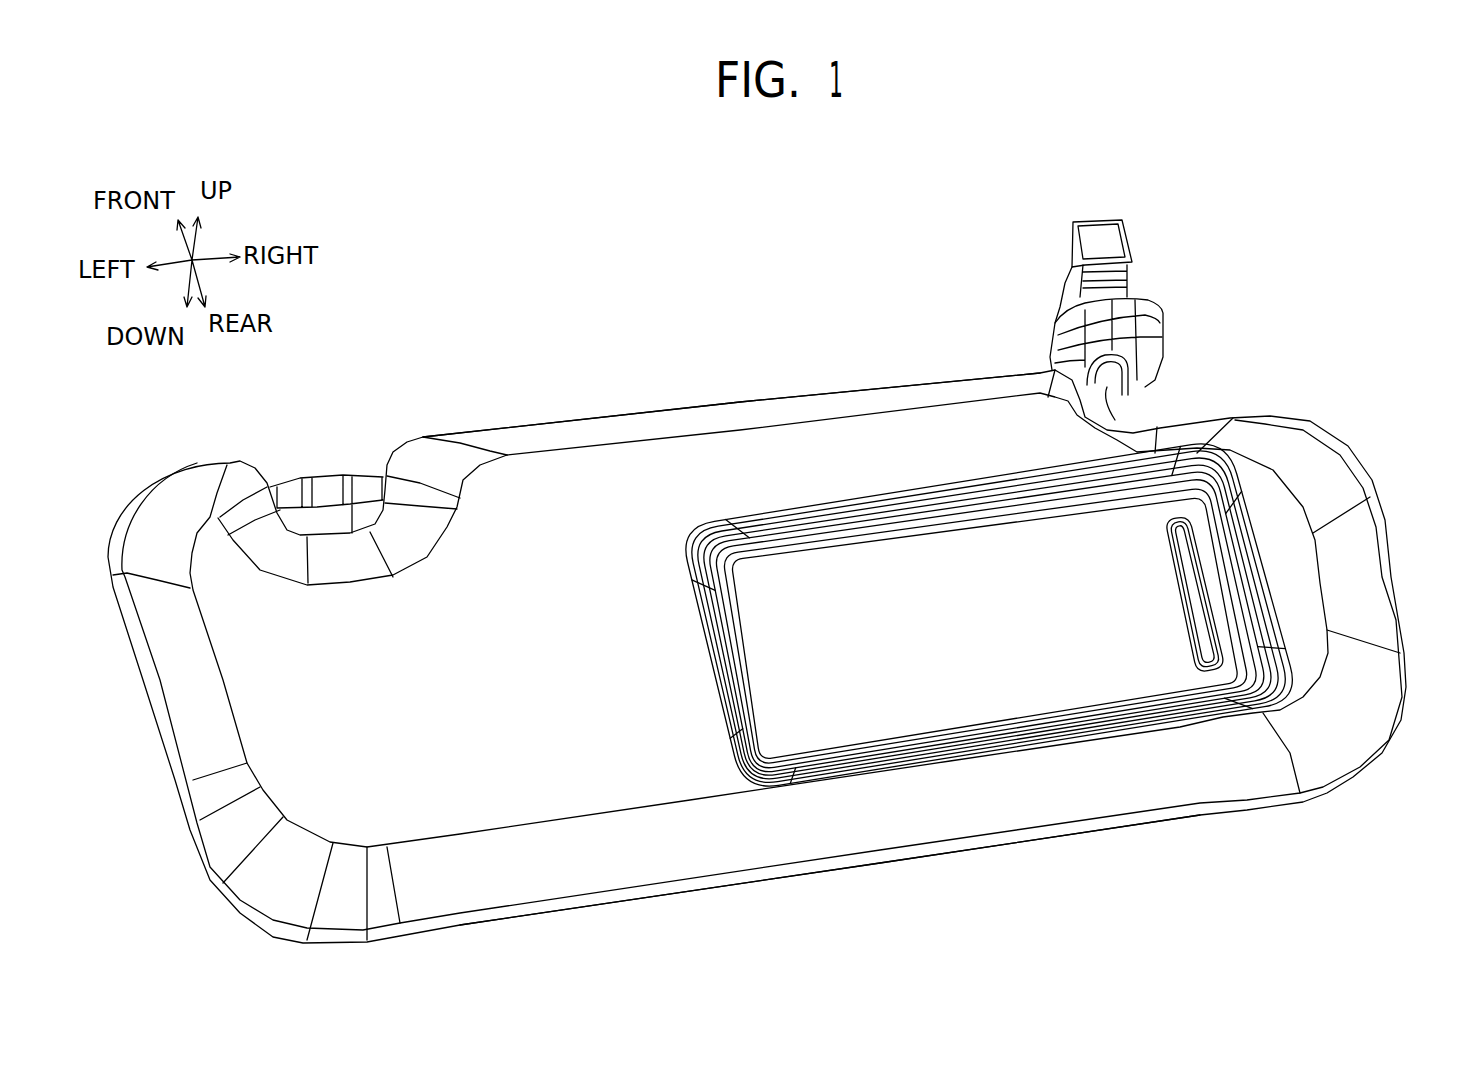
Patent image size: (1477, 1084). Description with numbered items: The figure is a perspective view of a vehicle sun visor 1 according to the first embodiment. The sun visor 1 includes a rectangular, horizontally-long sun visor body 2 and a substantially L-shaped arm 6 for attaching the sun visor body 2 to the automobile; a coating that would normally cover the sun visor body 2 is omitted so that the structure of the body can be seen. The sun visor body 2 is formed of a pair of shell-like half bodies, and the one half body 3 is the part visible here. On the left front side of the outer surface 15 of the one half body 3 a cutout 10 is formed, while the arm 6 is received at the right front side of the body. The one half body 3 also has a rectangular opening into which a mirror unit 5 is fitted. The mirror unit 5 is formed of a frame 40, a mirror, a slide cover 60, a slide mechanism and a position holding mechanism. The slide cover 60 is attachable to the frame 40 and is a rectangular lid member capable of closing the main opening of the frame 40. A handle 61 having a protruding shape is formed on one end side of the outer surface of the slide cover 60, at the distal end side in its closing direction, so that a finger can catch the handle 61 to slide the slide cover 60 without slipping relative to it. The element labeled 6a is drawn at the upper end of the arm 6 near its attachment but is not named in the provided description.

The sun visor 1 is at (623, 233).
The sun visor body 2 is at (826, 343).
The one half body 3 is at (659, 391).
The mirror unit 5 is at (1043, 769).
The arm 6 is at (1152, 398).
The bracket 6a is at (1147, 360).
The cutout 10 is at (357, 480).
The outer surface 15 is at (543, 493).
The frame 40 is at (1140, 727).
The slide cover 60 is at (948, 680).
The handle 61 is at (1197, 603).